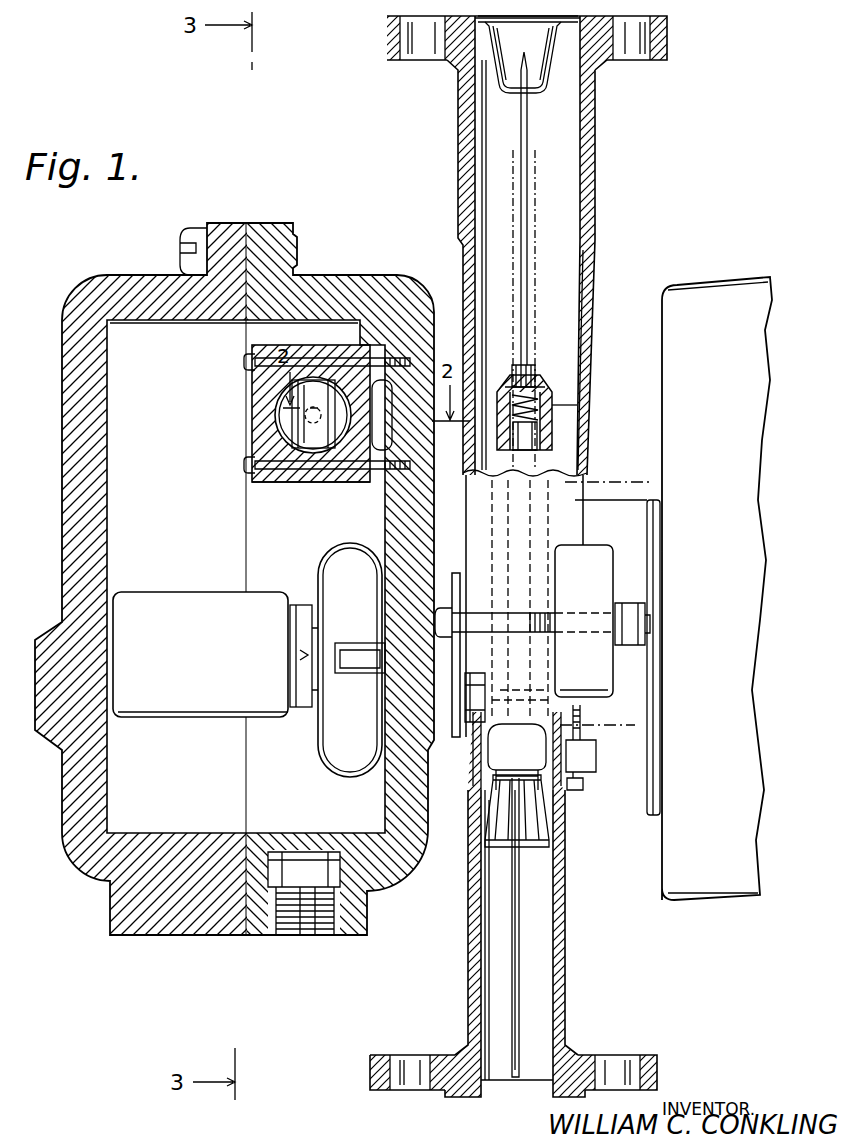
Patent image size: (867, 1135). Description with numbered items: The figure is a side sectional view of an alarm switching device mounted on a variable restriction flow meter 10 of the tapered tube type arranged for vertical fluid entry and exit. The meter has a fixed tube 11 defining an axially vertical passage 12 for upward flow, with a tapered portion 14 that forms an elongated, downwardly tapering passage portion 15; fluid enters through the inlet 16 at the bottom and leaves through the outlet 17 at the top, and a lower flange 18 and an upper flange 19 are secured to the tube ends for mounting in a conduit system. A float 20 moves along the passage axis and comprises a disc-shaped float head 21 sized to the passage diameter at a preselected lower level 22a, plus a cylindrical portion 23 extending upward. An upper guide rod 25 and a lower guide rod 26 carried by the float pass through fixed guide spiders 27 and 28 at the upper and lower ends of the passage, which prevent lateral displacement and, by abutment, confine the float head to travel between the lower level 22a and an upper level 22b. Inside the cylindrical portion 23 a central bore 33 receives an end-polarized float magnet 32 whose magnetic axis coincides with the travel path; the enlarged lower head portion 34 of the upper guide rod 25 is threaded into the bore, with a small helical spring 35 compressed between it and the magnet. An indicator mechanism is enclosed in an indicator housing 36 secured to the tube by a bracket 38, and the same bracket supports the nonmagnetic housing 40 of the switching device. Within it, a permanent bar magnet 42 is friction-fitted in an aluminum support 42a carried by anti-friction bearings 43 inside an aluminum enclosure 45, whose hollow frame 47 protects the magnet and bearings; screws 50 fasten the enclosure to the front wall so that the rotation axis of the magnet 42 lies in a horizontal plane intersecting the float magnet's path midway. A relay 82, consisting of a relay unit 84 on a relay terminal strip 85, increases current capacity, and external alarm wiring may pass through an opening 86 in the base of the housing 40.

The variable restriction flow meter 10 is at (612, 215).
The fixed tube 11 is at (590, 228).
The passage 12 is at (565, 136).
The tapered portion 14 is at (580, 420).
The tapered passage portion 15 is at (563, 371).
The inlet 16 is at (500, 1090).
The outlet 17 is at (548, 34).
The lower flange 18 is at (378, 1061).
The upper flange 19 is at (667, 42).
The float 20 is at (494, 742).
The float head 21 is at (580, 775).
The lower level 22a is at (612, 740).
The upper level 22b is at (616, 484).
The cylindrical portion 23 is at (545, 430).
The upper guide rod 25 is at (522, 128).
The lower guide rod 26 is at (520, 955).
The upper guide spider 27 is at (552, 68).
The lower guide spider 28 is at (549, 826).
The float magnet 32 is at (522, 427).
The central bore 33 is at (540, 400).
The lower head portion 34 is at (531, 372).
The helical spring 35 is at (510, 392).
The indicator housing 36 is at (729, 590).
The bracket 38 is at (500, 620).
The housing 40 is at (100, 280).
The permanent bar magnet 42 is at (302, 397).
The aluminum support 42a is at (348, 430).
The anti-friction bearings 43 is at (262, 440).
The aluminum enclosure 45 is at (302, 482).
The hollow frame 47 is at (258, 482).
The screws 50 is at (335, 363).
The relay 82 is at (179, 583).
The relay unit 84 is at (209, 665).
The relay terminal strip 85 is at (359, 596).
The opening 86 is at (290, 850).